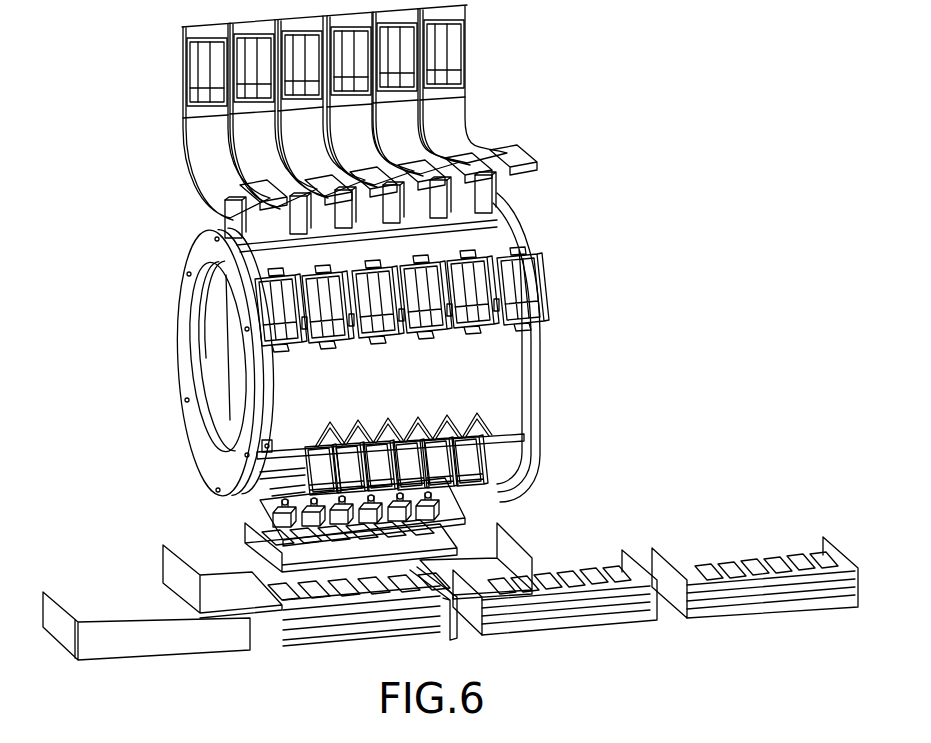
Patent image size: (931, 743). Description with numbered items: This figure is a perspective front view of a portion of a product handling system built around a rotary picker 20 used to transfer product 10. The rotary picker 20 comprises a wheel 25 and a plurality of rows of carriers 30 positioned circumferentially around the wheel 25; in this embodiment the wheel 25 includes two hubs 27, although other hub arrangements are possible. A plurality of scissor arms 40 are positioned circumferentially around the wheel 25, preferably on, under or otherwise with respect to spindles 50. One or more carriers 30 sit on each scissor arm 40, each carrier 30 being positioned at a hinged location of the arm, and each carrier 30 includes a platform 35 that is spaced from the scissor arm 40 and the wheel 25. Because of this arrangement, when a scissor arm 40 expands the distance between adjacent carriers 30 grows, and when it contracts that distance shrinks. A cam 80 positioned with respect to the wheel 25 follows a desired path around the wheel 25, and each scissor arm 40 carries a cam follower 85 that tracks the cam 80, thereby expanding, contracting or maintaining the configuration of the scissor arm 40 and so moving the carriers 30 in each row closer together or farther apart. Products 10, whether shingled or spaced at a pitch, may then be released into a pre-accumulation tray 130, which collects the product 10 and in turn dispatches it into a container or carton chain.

The rotary picker 20 is at (562, 160).
The product 10 is at (527, 283).
The wheel 25 is at (503, 378).
The hub 27 is at (528, 410).
The carrier 30 is at (212, 230).
The platform 35 is at (440, 518).
The scissor arm 40 is at (507, 229).
The spindle 50 is at (524, 436).
The cam 80 is at (273, 392).
The cam follower 85 is at (267, 443).
The pre-accumulation tray 130 is at (515, 552).